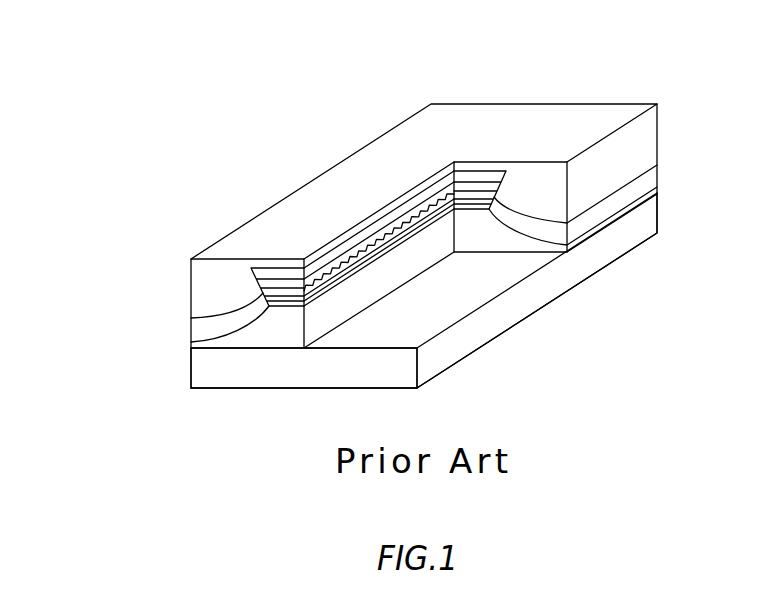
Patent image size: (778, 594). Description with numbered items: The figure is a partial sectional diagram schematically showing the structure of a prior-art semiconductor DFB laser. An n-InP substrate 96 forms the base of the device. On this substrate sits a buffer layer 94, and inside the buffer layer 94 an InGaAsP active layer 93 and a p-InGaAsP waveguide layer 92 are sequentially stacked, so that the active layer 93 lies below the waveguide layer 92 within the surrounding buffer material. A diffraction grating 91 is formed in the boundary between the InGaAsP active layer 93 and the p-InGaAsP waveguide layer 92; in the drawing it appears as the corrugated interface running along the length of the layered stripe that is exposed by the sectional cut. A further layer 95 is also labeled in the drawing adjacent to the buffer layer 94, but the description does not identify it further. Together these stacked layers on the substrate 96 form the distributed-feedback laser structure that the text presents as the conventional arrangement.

The diffraction grating 91 is at (415, 232).
The p-InGaAsP waveguide layer 92 is at (398, 227).
The InGaAsP active layer 93 is at (410, 238).
The buffer layer 94 is at (198, 301).
The lower current blocking layer 95 is at (198, 328).
The n-InP substrate 96 is at (485, 323).